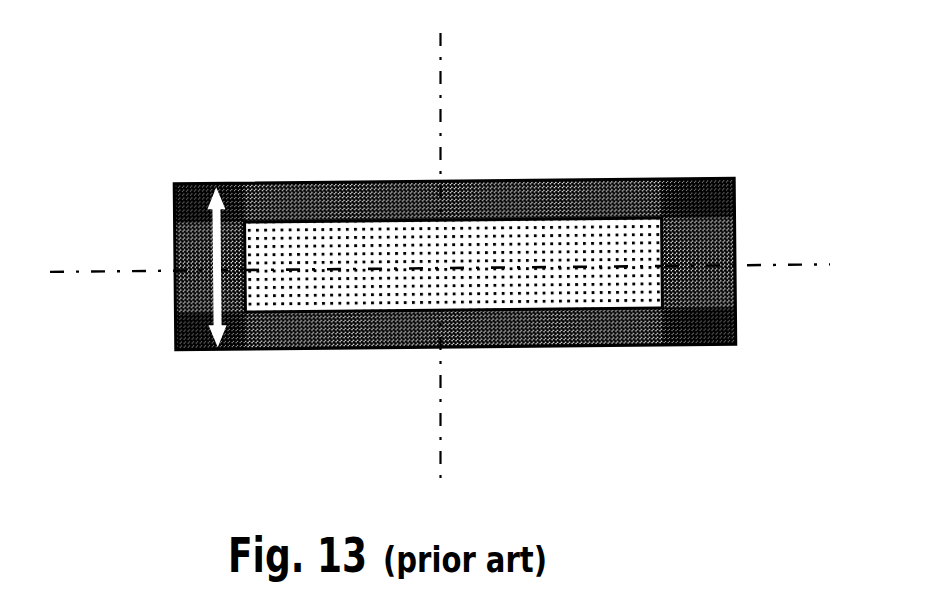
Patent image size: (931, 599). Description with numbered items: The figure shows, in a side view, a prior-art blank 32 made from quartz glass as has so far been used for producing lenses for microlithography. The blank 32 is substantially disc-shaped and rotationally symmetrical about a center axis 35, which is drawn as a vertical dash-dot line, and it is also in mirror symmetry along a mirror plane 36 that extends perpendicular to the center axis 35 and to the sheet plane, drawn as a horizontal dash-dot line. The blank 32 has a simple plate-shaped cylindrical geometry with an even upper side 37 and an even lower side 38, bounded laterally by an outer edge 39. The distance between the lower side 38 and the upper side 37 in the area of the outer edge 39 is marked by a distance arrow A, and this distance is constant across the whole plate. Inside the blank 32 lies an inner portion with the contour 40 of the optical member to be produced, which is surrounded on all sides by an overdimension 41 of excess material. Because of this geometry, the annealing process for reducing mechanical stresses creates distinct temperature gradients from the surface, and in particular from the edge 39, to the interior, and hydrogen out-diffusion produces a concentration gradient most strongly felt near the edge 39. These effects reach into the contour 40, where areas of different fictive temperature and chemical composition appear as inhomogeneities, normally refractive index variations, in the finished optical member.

The blank 32 is at (560, 167).
The center axis 35 is at (438, 127).
The mirror plane 36 is at (765, 267).
The upper side 37 is at (290, 183).
The lower side 38 is at (310, 350).
The outer edge 39 is at (182, 173).
The contour 40 is at (517, 300).
The overdimension 41 is at (720, 323).
The distance arrow A is at (213, 240).